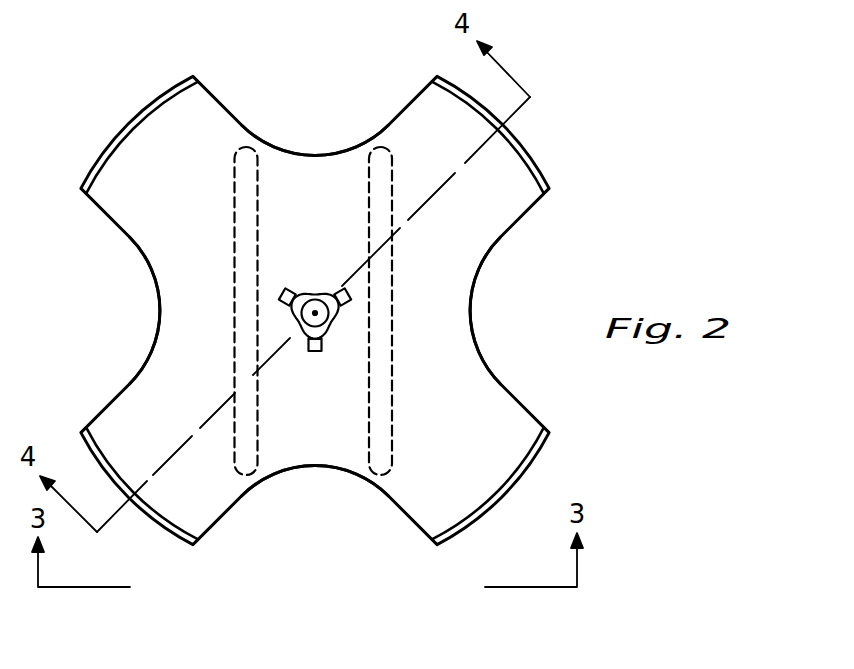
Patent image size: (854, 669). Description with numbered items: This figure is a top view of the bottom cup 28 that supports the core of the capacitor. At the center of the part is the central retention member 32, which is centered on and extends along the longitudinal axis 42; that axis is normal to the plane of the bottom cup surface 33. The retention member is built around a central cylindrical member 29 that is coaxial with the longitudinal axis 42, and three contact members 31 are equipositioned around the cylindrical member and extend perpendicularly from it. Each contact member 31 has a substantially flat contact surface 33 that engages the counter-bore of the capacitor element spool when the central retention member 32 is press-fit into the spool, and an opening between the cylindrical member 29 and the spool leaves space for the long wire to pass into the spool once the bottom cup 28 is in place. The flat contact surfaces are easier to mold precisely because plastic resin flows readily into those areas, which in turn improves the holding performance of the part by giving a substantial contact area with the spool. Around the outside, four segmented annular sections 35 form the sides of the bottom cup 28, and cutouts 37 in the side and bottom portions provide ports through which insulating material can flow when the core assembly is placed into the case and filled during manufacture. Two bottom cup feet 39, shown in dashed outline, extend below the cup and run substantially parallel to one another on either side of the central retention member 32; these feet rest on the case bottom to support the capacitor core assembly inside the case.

The bottom cup 28 is at (497, 212).
The central cylindrical member 29 is at (322, 291).
The contact members 31 is at (292, 289).
The central retention member 32 is at (278, 324).
The contact surface 33 is at (281, 296).
The segmented annular sections 35 is at (127, 139).
The cutouts 37 is at (323, 96).
The bottom cup feet 39 is at (258, 431).
The longitudinal axis 42 is at (315, 313).